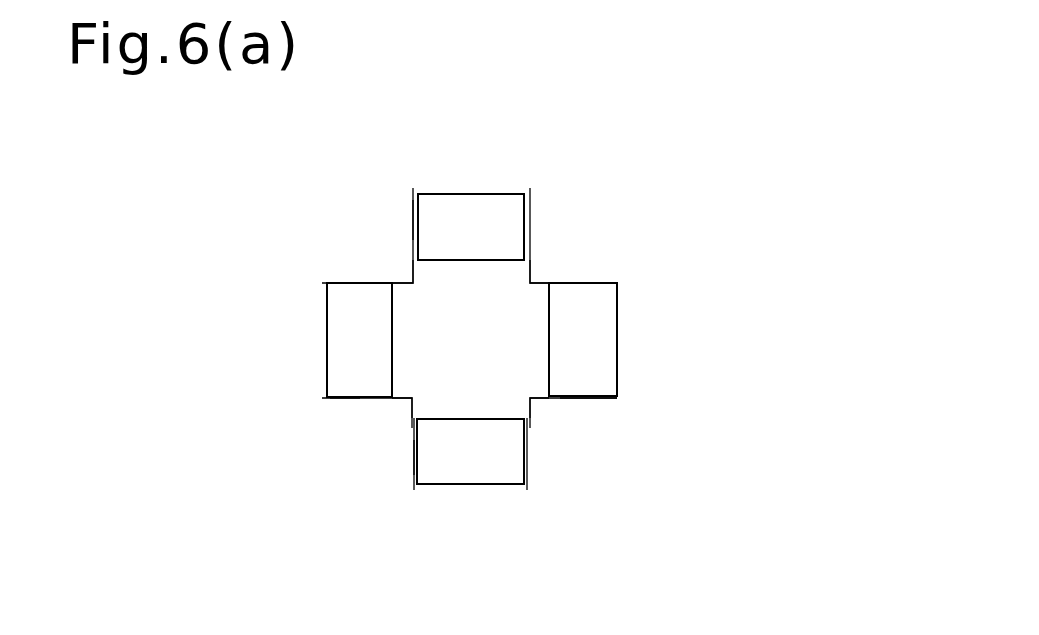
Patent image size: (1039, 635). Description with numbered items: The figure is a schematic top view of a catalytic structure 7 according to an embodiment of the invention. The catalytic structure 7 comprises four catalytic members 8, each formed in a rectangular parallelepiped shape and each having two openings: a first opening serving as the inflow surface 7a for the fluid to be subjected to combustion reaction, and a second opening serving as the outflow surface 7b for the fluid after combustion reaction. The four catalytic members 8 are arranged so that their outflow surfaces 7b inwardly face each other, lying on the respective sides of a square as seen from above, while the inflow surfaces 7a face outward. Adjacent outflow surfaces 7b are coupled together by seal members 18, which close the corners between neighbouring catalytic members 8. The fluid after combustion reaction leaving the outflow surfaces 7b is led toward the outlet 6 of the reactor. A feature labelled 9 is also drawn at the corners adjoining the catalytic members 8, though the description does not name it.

The catalytic structure 7 is at (820, 177).
The inflow surface 7a is at (472, 177).
The outflow surface 7b is at (471, 279).
The catalytic member 8 is at (509, 196).
The edge portion 9 is at (400, 209).
The seal member 18 is at (389, 258).
The outlet 6 is at (604, 408).